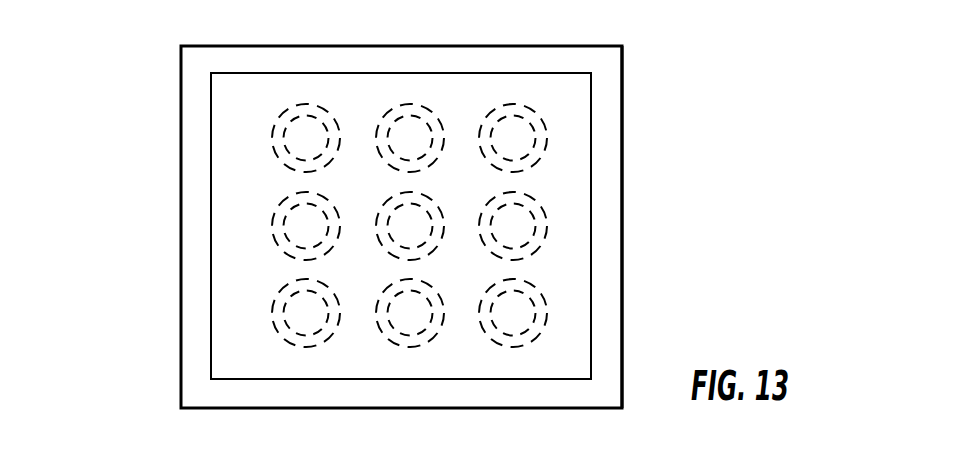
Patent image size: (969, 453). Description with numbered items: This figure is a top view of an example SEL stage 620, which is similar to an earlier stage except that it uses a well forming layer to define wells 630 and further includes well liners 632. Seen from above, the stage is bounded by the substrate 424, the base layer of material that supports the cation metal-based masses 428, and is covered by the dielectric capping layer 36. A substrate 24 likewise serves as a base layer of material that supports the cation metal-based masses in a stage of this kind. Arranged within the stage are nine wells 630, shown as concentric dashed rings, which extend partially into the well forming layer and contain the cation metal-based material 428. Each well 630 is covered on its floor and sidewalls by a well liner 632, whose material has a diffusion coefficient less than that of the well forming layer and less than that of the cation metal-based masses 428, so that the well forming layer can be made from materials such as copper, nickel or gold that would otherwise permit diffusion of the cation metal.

The SEL stage 620 is at (100, 78).
The substrate 24 is at (181, 310).
The substrate 424 is at (622, 225).
The dielectric capping layer 36 is at (591, 313).
The wells 630 is at (545, 124).
The well liners 632 is at (542, 156).
The cation metal-based masses 428 is at (513, 130).